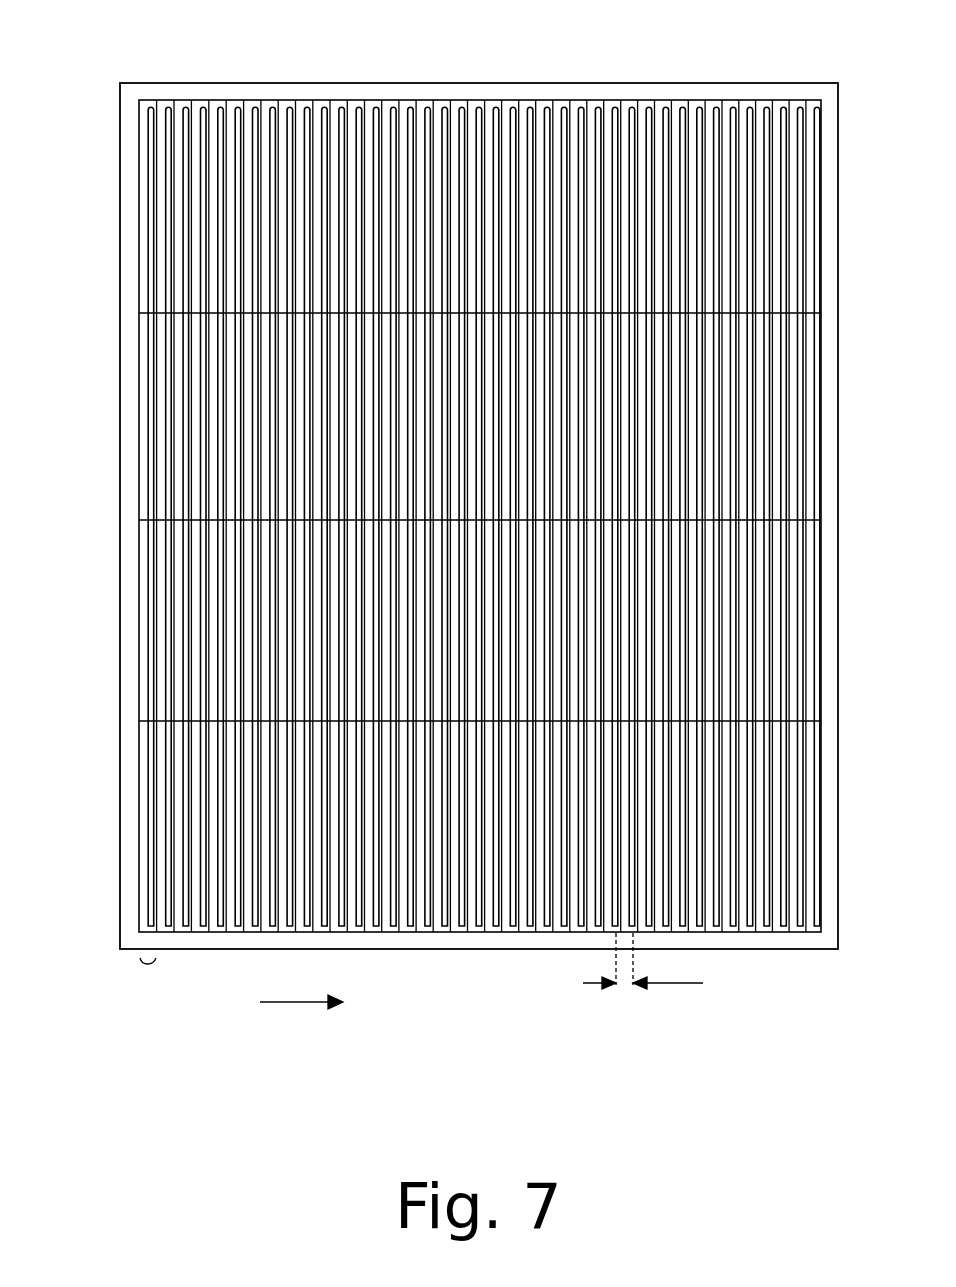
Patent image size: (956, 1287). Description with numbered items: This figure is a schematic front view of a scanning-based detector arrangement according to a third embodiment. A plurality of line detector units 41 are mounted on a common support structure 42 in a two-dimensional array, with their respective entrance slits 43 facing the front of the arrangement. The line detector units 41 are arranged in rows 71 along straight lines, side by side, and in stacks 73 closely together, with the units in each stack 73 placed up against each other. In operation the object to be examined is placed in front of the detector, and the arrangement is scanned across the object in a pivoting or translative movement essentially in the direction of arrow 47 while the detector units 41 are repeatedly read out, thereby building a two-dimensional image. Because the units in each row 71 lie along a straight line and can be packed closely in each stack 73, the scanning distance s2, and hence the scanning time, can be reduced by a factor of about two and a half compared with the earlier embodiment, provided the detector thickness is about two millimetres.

The line detector unit 41 is at (270, 100).
The common support structure 42 is at (120, 137).
The entrance slit 43 is at (265, 130).
The arrow 47 is at (292, 1003).
The row 71 is at (148, 982).
The stack 73 is at (108, 723).
The scanning distance s2 is at (643, 984).